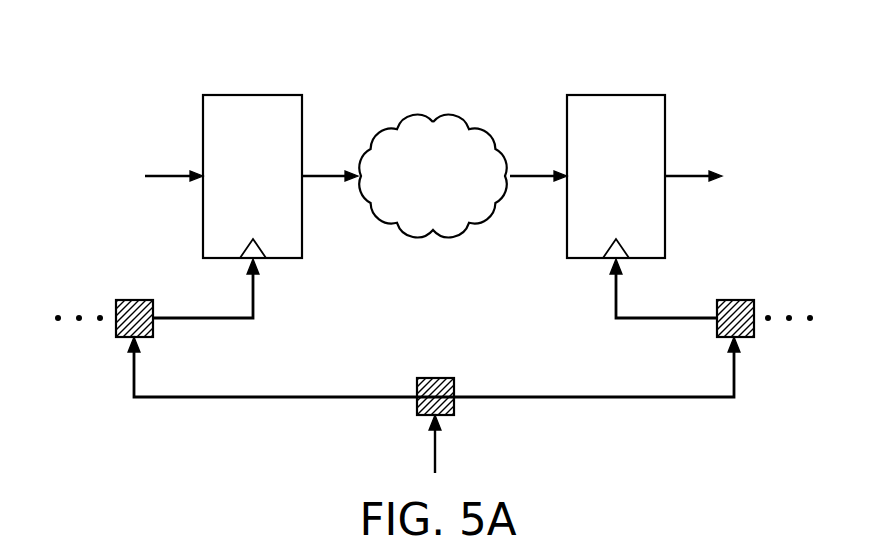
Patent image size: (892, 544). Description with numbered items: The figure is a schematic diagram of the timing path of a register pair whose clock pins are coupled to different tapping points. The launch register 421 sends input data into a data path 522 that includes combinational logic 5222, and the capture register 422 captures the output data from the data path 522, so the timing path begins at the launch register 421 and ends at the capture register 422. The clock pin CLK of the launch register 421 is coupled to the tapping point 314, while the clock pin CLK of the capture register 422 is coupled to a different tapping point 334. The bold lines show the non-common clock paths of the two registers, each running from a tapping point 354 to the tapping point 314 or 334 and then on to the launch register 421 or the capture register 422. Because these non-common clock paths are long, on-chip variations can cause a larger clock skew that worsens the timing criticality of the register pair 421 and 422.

The launch register 421 is at (252, 95).
The capture register 422 is at (616, 95).
The data path 522 is at (434, 135).
The combinational logic 5222 is at (432, 176).
The tapping point 314 is at (135, 300).
The tapping point 334 is at (733, 300).
The tapping point 354 is at (435, 378).